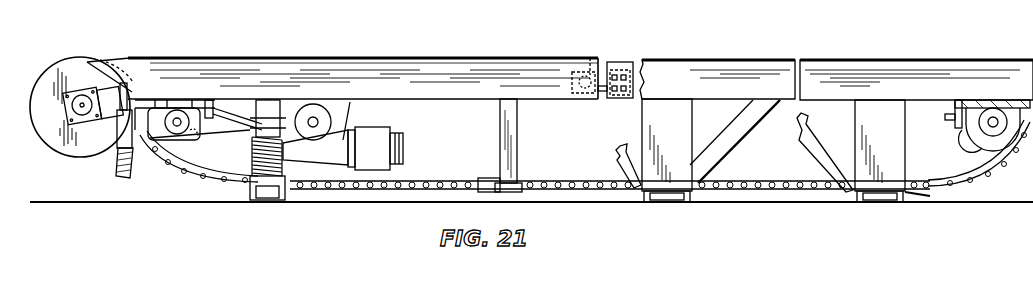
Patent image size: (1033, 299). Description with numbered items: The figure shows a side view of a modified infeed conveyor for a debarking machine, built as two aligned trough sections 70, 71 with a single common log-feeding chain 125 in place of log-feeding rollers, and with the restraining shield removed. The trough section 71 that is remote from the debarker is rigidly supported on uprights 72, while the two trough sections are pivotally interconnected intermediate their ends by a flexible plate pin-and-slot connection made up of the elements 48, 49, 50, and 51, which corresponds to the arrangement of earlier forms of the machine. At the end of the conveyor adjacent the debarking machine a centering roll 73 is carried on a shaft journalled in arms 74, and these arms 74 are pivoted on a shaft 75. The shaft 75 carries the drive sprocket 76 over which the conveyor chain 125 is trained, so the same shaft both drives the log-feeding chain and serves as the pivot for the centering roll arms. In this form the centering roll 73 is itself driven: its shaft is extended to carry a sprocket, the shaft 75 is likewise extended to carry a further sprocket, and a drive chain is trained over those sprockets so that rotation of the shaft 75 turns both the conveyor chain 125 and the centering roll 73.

The pin-and-slot connection element 48 is at (592, 64).
The pin-and-slot connection element 49 is at (608, 76).
The pin-and-slot connection element 50 is at (623, 92).
The pin-and-slot connection element 51 is at (572, 82).
The trough section 70 is at (413, 68).
The trough section 71 is at (755, 69).
The uprights 72 is at (682, 131).
The centering roll 73 is at (87, 62).
The arms 74 is at (105, 117).
The shaft 75 is at (178, 120).
The drive sprocket 76 is at (193, 138).
The conveyor chain 125 is at (447, 181).